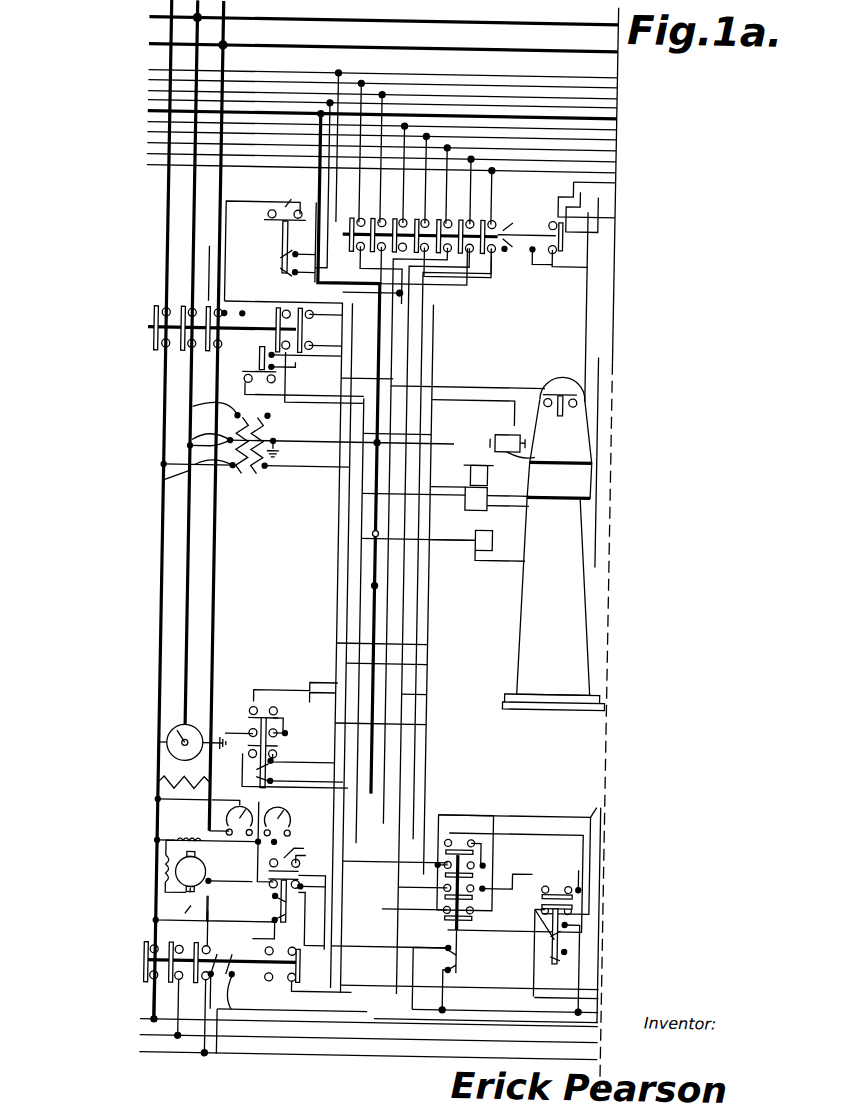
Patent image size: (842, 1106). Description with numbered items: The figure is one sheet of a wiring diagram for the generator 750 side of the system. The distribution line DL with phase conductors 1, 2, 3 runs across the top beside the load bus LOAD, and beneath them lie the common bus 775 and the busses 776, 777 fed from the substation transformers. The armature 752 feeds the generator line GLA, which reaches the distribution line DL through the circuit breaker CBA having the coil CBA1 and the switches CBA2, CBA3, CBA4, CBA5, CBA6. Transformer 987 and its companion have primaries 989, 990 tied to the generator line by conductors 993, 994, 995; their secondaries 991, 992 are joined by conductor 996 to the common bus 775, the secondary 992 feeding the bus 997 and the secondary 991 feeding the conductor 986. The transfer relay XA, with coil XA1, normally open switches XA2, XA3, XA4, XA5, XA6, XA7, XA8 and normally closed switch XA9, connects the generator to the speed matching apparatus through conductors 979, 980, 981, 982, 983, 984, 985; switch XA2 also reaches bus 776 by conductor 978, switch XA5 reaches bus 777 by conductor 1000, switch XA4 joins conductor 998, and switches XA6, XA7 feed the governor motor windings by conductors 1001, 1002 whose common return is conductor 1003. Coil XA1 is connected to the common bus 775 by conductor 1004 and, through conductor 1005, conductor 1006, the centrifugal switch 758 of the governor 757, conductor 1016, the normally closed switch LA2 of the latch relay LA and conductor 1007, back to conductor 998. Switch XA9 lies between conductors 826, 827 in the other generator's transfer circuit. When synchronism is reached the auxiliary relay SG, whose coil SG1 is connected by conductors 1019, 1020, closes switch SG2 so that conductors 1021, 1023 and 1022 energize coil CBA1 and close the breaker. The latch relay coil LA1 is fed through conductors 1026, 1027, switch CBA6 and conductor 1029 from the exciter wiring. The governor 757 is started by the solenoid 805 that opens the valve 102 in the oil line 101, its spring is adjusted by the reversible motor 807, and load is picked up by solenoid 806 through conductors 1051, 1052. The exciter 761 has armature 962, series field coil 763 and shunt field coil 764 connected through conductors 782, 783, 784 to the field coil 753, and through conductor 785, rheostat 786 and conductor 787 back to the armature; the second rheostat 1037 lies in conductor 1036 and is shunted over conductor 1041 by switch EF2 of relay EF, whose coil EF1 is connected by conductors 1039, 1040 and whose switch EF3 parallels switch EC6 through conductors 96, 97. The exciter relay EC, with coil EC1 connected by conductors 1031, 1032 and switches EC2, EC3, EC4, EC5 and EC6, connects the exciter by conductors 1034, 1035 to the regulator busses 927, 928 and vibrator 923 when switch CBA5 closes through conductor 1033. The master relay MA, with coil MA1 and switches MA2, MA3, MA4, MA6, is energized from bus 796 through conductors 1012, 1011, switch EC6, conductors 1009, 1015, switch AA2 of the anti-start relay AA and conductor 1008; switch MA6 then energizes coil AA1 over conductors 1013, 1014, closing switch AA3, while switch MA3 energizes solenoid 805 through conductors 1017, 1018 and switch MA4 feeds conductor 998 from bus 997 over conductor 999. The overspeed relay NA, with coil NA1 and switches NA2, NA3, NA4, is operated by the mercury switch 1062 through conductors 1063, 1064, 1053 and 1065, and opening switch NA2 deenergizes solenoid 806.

The load bus LOAD is at (130, 30).
The distribution line DL is at (142, 46).
The bus 776 is at (148, 70).
The bus 777 is at (148, 100).
The common bus 775 is at (148, 111).
The conductor 978 is at (338, 70).
The conductor 979 is at (361, 80).
The conductor 980 is at (382, 91).
The conductor 981 is at (405, 122).
The conductor 982 is at (448, 143).
The conductor 983 is at (427, 132).
The conductor 984 is at (472, 154).
The conductor 985 is at (493, 165).
The conductor 1019 is at (330, 178).
The conductor 1021 is at (238, 200).
The auxiliary relay SG is at (282, 234).
The coil SG1 is at (285, 254).
The normally open switch SG2 is at (273, 196).
The transfer relay XA is at (535, 232).
The coil XA1 is at (518, 248).
The normally open switch XA2 is at (361, 212).
The normally open switch XA3 is at (382, 212).
The normally open switch XA4 is at (404, 212).
The normally open switch XA5 is at (426, 212).
The normally open switch XA6 is at (449, 212).
The normally open switch XA7 is at (471, 212).
The normally open switch XA8 is at (493, 212).
The normally closed switch XA9 is at (557, 252).
The conductor 826 is at (625, 183).
The conductor 827 is at (597, 214).
The conductor 1005 is at (597, 258).
The conductor 1006 is at (612, 350).
The conductor 1000 is at (404, 290).
The conductor 1023 is at (222, 230).
The conductor 1022 is at (214, 258).
The conductor 1020 is at (446, 285).
The conductor 1004 is at (446, 294).
The conductor 986 is at (392, 346).
The conductor 1001 is at (428, 336).
The conductor 1002 is at (498, 353).
The conductor 1003 is at (460, 424).
The conductor 1016 is at (492, 390).
The conductor 998 is at (382, 376).
The secondary 991 is at (273, 420).
The conductor 996 is at (336, 440).
The secondary 992 is at (273, 466).
The circuit breaker CBA is at (218, 342).
The coil CBA1 is at (182, 300).
The normally open switch CBA2 is at (155, 315).
The normally open switch CBA3 is at (156, 335).
The normally open switch CBA4 is at (190, 348).
The normally open switch CBA5 is at (280, 305).
The normally open switch CBA6 is at (312, 311).
The conductor 1027 is at (315, 314).
The conductor 1026 is at (315, 343).
The latch relay LA is at (278, 363).
The coil LA1 is at (262, 357).
The normally closed switch LA2 is at (253, 380).
The conductor 1007 is at (341, 380).
The governor 757 is at (568, 623).
The centrifugally operated switch 758 is at (558, 390).
The starting solenoid 805 is at (490, 466).
The reversible motor 807 is at (516, 448).
The valve 102 is at (482, 487).
The oil line 101 is at (515, 500).
The load pick up solenoid 806 is at (495, 530).
The conductor 1017 is at (414, 475).
The conductor 1018 is at (461, 491).
The conductor 1051 is at (461, 534).
The bus 997 is at (416, 609).
The conductor 1029 is at (396, 634).
The conductor 1032 is at (376, 664).
The conductor 1052 is at (410, 714).
The armature 752 is at (180, 733).
The mercury switch 1062 is at (179, 746).
The generator 750 is at (174, 750).
The relay NA is at (261, 774).
The coil NA1 is at (278, 768).
The normally closed switch NA2 is at (286, 752).
The normally closed switch NA3 is at (286, 730).
The normally open switch NA4 is at (275, 700).
The conductor 1063 is at (230, 726).
The conductor 1064 is at (287, 722).
The conductor 1065 is at (294, 698).
The conductor 1053 is at (328, 784).
The field coil 753 is at (164, 782).
The conductor 784 is at (164, 802).
The conductor 783 is at (164, 839).
The exciter 761 is at (174, 854).
The series field coil 763 is at (188, 872).
The armature 962 is at (170, 892).
The conductor 782 is at (180, 900).
The conductor 1034 is at (154, 921).
The rheostat 786 is at (250, 812).
The conductor 785 is at (214, 811).
The shunt field coil 764 is at (181, 830).
The conductor 787 is at (198, 870).
The second rheostat 1037 is at (292, 821).
The relay EF is at (304, 900).
The coil EF1 is at (288, 904).
The normally closed switch EF2 is at (316, 886).
The normally open switch EF3 is at (308, 851).
The conductor 96 is at (300, 849).
The conductor 97 is at (314, 873).
The conductor 1041 is at (249, 841).
The conductor 1039 is at (250, 872).
The conductor 1036 is at (328, 936).
The conductor 1033 is at (184, 911).
The conductor 1040 is at (244, 928).
The exciter relay EC is at (246, 966).
The coil EC1 is at (251, 946).
The normally open switch EC2 is at (156, 973).
The normally open switch EC3 is at (156, 971).
The normally open switch EC4 is at (156, 947).
The normally open switch EC5 is at (289, 1008).
The normally closed switch EC6 is at (314, 970).
The conductor 1031 is at (238, 1050).
The bus 927 is at (398, 1053).
The conductor 1035 is at (480, 1038).
The bus 928 is at (609, 1016).
The bus 796 is at (605, 1004).
The vibrator 923 is at (613, 982).
The conductor 1012 is at (445, 979).
The conductor 1008 is at (552, 992).
The master relay MA is at (477, 938).
The coil MA1 is at (471, 956).
The normally open switch MA2 is at (499, 862).
The normally open switch MA3 is at (499, 883).
The normally open switch MA4 is at (485, 908).
The switch MA6 is at (497, 848).
The conductor 999 is at (488, 824).
The conductor 1013 is at (547, 824).
The conductor 1015 is at (611, 807).
The conductor 1009 is at (404, 892).
The conductor 1011 is at (404, 943).
The anti-start relay AA is at (591, 935).
The coil AA1 is at (544, 915).
The normally closed switch AA2 is at (549, 916).
The normally open switch AA3 is at (602, 890).
The conductor 1014 is at (592, 975).
The transformer 987 is at (198, 406).
The conductor 994 is at (198, 422).
The primary 989 is at (196, 445).
The conductor 993 is at (201, 464).
The primary 990 is at (170, 464).
The conductor 995 is at (170, 480).
The phase conductor 1 is at (152, 585).
The phase conductor 2 is at (190, 585).
The phase conductor 3 is at (220, 585).
The generator line GLA is at (162, 659).